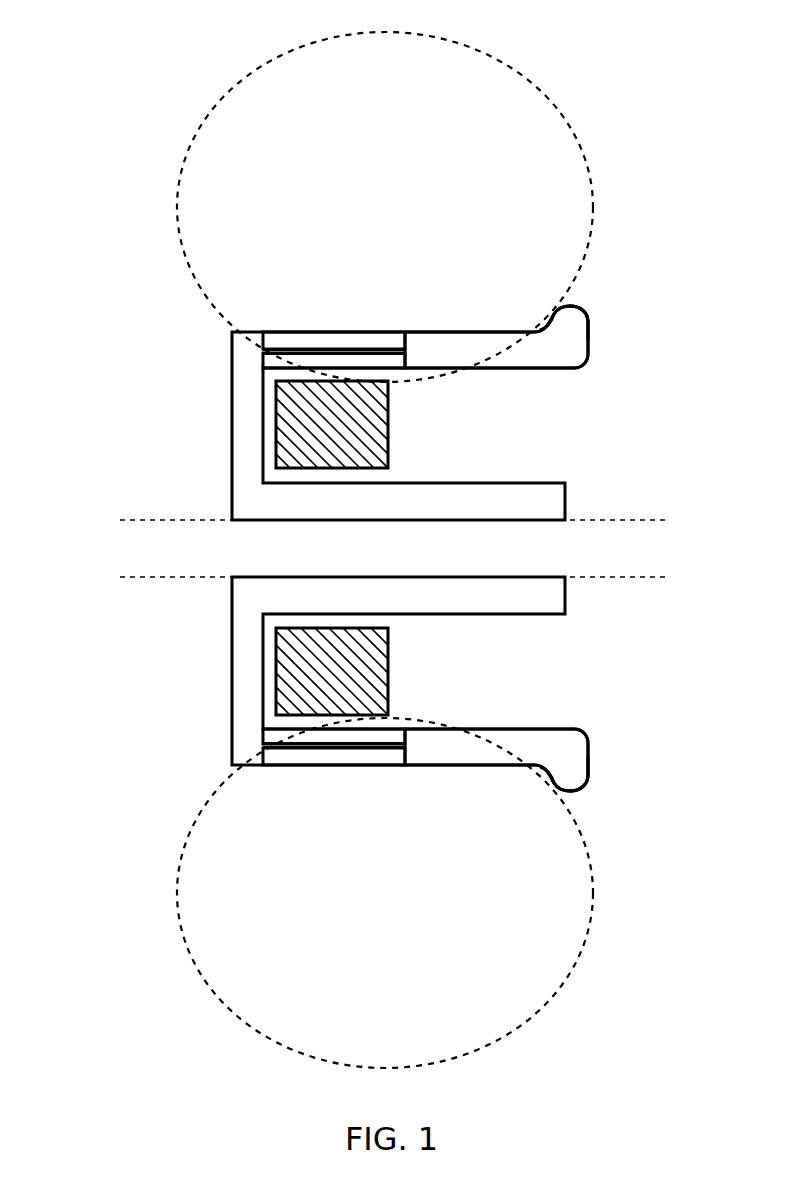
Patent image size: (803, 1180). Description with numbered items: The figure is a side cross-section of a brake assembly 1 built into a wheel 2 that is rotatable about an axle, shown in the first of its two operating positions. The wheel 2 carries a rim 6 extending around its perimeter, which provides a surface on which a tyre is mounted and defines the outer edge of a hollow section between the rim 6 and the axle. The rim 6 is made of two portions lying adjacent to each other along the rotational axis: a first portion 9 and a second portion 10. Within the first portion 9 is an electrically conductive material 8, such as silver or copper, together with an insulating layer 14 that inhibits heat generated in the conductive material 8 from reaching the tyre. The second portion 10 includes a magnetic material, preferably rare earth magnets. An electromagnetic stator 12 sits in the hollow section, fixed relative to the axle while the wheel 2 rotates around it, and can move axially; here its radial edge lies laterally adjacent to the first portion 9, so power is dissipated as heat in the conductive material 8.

The wheel assembly 1 is at (104, 106).
The wheel 2 is at (232, 490).
The rim 6 is at (590, 356).
The electrically conductive material 8 is at (278, 348).
The first portion 9 is at (298, 328).
The second portion 10 is at (564, 308).
The electromagnetic stator 12 is at (390, 437).
The insulating layer 14 is at (266, 358).